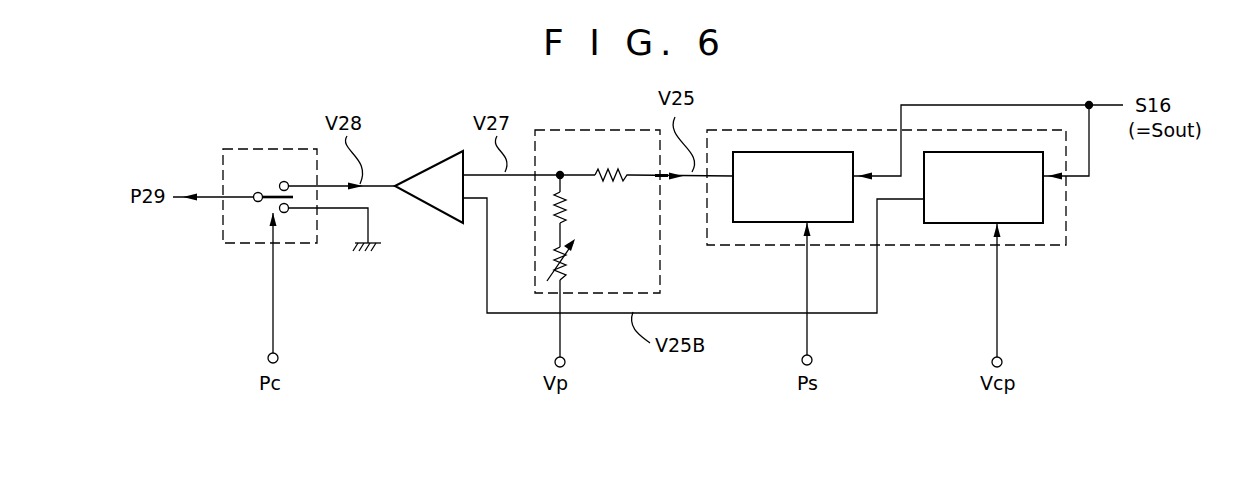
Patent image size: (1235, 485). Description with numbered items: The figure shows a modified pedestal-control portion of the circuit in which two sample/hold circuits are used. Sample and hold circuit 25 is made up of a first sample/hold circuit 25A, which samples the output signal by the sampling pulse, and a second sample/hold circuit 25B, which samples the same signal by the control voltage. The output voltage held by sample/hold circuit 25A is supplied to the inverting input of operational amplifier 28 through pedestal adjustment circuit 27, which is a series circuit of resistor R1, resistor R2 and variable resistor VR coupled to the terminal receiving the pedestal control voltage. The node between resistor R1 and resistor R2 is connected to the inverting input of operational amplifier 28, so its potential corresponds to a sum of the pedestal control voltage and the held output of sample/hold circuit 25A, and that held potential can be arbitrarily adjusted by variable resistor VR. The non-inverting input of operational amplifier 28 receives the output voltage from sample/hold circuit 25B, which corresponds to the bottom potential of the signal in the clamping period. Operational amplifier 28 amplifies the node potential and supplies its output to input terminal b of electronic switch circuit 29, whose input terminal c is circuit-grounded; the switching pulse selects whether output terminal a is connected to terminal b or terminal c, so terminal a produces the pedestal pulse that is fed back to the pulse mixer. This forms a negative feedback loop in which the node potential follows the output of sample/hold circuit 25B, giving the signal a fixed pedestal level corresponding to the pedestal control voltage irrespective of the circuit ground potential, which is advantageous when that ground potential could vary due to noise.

The electronic switch circuit 29 is at (260, 149).
The operational amplifier 28 is at (433, 162).
The pedestal adjustment circuit 27 is at (597, 190).
The sample and hold circuit 25 is at (886, 184).
The sample/hold circuit 25A is at (772, 222).
The sample/hold circuit 25B is at (953, 225).
The resistor R1 is at (610, 172).
The resistor R2 is at (567, 198).
The variable resistor VR is at (567, 262).